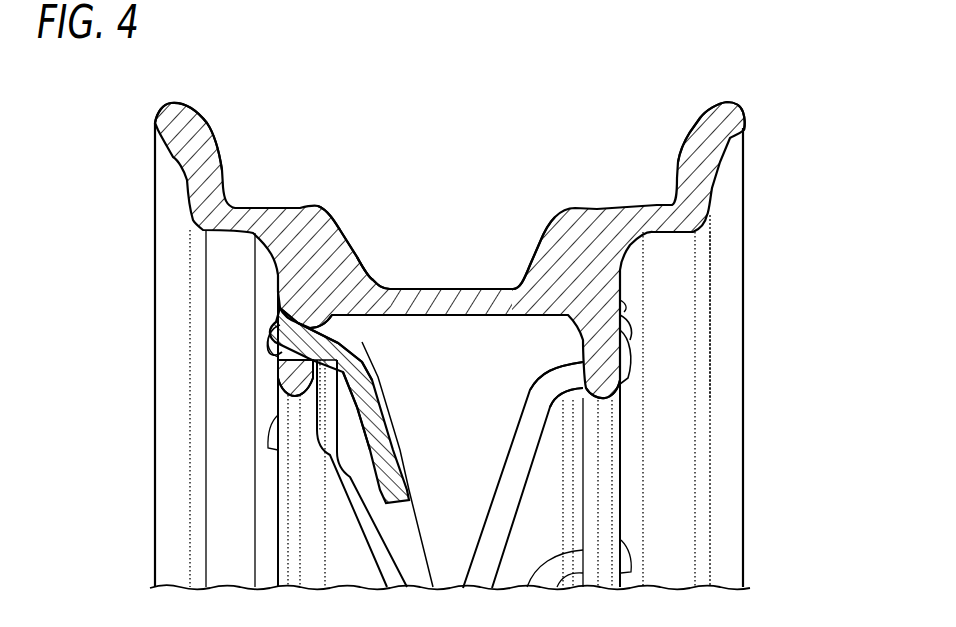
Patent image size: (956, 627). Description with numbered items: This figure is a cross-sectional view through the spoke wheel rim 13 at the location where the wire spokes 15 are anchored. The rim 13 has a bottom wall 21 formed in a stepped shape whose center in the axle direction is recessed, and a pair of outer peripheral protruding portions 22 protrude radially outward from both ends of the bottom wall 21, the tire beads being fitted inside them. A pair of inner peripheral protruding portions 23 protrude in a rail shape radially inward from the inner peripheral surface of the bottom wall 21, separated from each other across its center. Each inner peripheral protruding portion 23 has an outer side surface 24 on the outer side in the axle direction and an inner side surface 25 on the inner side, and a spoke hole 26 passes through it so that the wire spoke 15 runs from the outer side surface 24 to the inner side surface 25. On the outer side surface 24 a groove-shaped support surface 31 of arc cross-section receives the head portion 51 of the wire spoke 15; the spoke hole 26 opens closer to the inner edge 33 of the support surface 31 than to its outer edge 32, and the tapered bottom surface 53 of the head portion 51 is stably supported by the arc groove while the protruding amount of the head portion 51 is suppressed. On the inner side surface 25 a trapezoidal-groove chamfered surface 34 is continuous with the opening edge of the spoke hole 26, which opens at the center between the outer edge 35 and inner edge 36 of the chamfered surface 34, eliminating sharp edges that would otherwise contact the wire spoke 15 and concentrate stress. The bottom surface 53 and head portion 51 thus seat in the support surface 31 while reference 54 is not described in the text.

The rim 13 is at (584, 183).
The wire spoke 15 is at (430, 493).
The bottom wall 21 is at (462, 287).
The outer peripheral protruding portion 22 is at (175, 160).
The inner peripheral protruding portion 23 is at (275, 383).
The outer side surface 24 is at (256, 273).
The inner side surface 25 is at (395, 418).
The spoke hole 26 is at (330, 328).
The support surface 31 is at (274, 312).
The outer edge 32 is at (278, 300).
The inner edge 33 is at (277, 362).
The chamfered surface 34 is at (372, 372).
The outer edge 35 is at (373, 285).
The inner edge 36 is at (388, 400).
The head portion 51 is at (270, 336).
The bottom surface 53 is at (328, 273).
The extension portion 54 is at (367, 350).